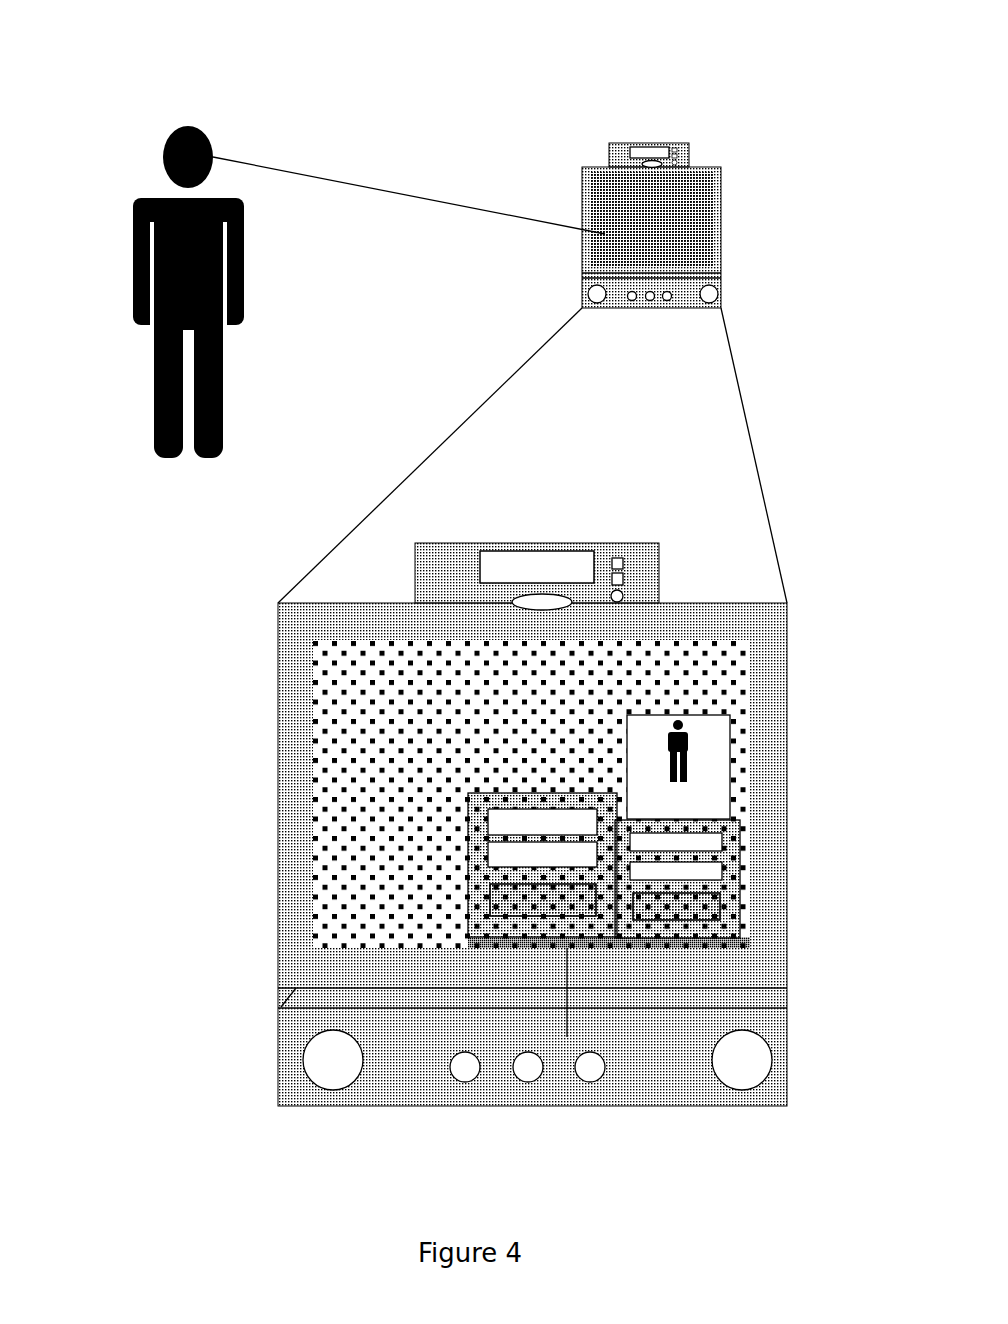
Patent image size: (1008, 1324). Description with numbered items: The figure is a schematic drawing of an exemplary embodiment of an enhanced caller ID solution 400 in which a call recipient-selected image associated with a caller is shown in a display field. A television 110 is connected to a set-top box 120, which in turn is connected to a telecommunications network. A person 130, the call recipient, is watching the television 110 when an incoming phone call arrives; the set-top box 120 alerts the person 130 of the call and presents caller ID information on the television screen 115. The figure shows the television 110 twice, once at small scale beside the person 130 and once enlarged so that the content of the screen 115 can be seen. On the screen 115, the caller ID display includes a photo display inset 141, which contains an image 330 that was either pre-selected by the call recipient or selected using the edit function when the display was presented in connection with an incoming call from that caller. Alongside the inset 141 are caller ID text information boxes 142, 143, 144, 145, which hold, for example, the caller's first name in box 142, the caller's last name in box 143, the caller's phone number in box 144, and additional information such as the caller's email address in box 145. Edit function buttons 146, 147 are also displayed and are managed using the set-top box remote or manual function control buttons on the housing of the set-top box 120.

The video conferencing system environment 400 is at (482, 99).
The television 110 is at (721, 222).
The television screen 115 is at (327, 745).
The set-top box 120 is at (658, 143).
The person 130 is at (133, 218).
The photo display inset 141 is at (716, 778).
The caller ID text information box 142 is at (500, 819).
The caller ID text information box 143 is at (707, 846).
The caller ID text information box 144 is at (497, 858).
The caller ID text information box 145 is at (707, 875).
The edit function button 146 is at (518, 907).
The edit function button 147 is at (710, 910).
The image 330 is at (688, 748).